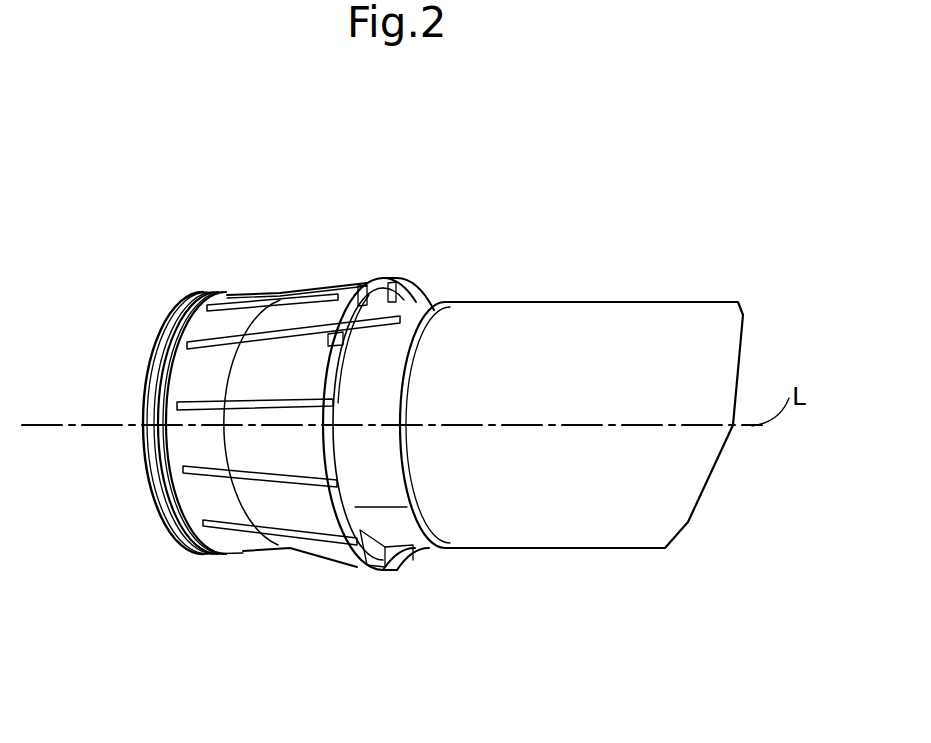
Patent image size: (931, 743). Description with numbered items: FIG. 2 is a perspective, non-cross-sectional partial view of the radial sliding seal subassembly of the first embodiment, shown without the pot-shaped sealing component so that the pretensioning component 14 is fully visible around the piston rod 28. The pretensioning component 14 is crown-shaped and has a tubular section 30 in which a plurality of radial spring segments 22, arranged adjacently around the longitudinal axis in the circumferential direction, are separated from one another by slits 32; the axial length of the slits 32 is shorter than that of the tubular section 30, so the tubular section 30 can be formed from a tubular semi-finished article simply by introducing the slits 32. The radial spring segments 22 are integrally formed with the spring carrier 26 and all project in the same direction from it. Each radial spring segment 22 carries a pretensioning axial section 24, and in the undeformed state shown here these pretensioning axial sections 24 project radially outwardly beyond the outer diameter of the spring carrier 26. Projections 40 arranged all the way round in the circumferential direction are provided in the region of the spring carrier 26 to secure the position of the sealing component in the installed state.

The pretensioning component 14 is at (247, 560).
The radial spring segments 22 is at (270, 377).
The pretensioning axial section 24 is at (345, 552).
The spring carrier 26 is at (155, 455).
The piston rod 28 is at (550, 379).
The tubular section 30 is at (187, 648).
The slits 32 is at (393, 303).
The projections 40 is at (147, 382).